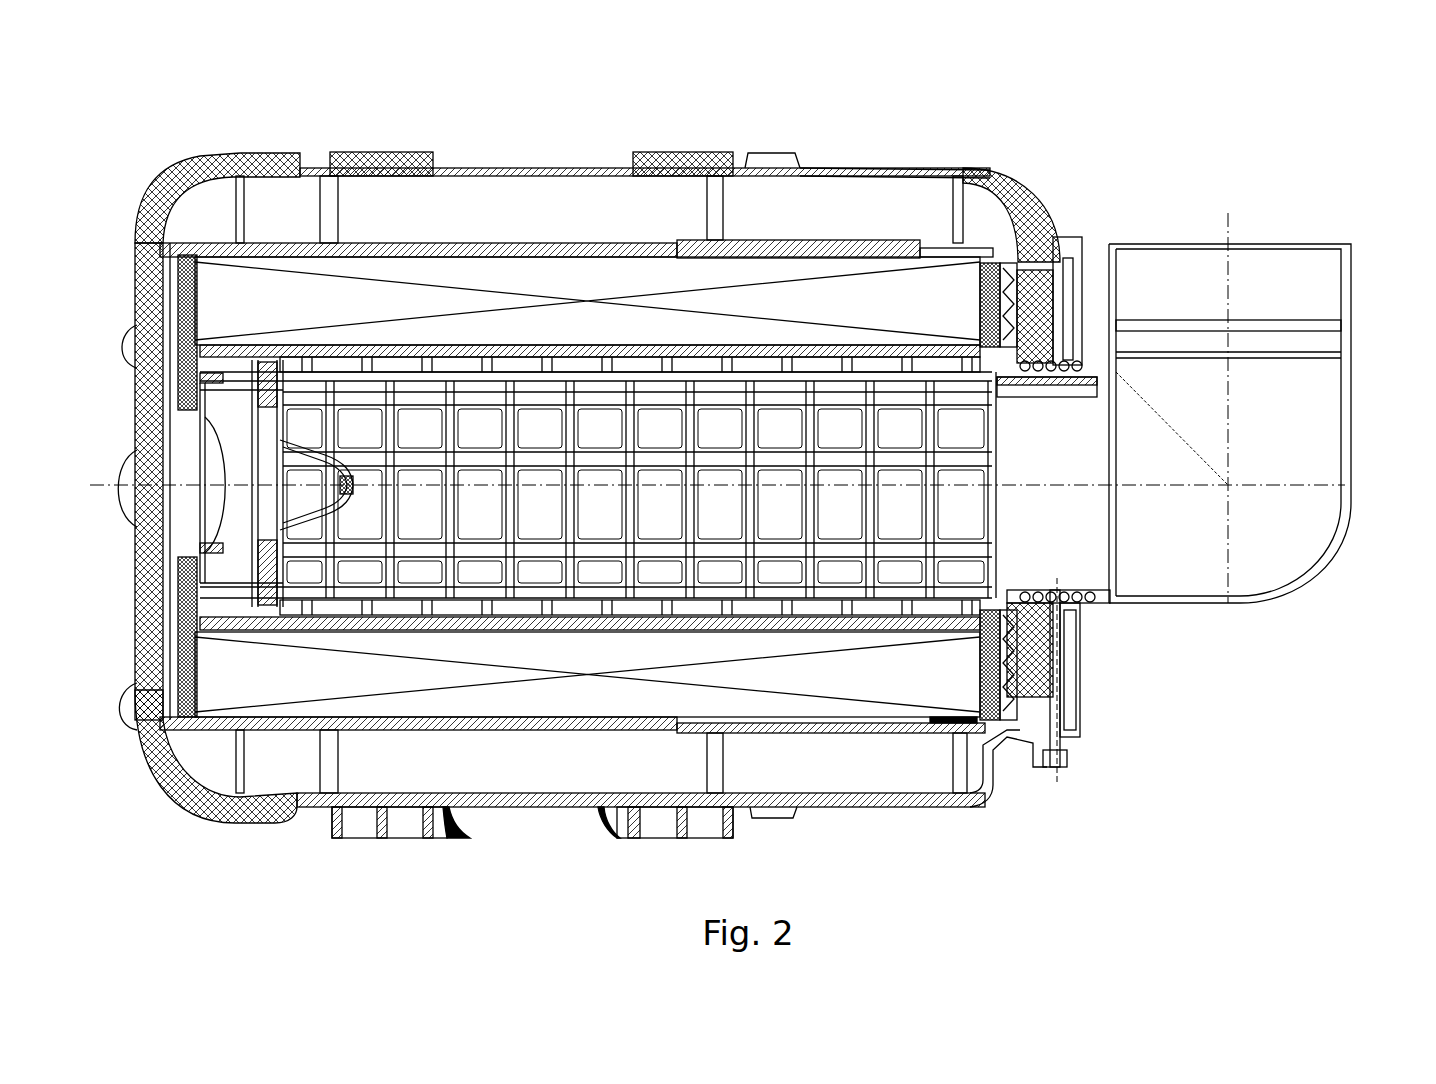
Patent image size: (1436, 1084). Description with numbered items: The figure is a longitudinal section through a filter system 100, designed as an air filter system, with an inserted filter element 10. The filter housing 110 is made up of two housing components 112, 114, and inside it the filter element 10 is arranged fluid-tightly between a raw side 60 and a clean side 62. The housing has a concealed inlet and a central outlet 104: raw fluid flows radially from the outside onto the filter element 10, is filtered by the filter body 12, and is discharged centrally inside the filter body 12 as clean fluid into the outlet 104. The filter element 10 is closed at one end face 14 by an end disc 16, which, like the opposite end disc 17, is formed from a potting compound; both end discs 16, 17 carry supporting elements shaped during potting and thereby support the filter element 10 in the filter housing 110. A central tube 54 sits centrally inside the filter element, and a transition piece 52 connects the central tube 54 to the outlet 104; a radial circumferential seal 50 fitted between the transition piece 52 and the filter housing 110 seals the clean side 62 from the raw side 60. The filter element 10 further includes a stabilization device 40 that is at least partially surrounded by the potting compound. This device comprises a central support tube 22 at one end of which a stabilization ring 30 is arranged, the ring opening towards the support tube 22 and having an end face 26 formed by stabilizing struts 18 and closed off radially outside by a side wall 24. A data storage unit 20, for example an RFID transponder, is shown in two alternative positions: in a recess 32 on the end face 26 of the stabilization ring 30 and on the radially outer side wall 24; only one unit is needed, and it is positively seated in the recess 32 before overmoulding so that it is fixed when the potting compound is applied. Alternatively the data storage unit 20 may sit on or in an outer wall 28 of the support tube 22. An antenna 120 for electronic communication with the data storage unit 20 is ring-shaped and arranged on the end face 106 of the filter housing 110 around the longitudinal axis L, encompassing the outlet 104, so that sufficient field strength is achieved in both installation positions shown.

The filter system 100 is at (1340, 200).
The filter element 10 is at (510, 240).
The filter body 12 is at (472, 277).
The end face 14 is at (1109, 310).
The end disc 16 is at (1119, 371).
The end disc 17 is at (137, 280).
The stabilizing struts 18 is at (1033, 687).
The data storage unit 20 is at (977, 323).
The support tube 22 is at (607, 350).
The side wall 24 is at (968, 245).
The end face 26 is at (1010, 340).
The outer wall 28 is at (630, 607).
The stabilization ring 30 is at (1023, 723).
The recess 32 is at (977, 305).
The stabilization device 40 is at (538, 330).
The seal 50 is at (1027, 590).
The transition piece 52 is at (1077, 590).
The central tube 54 is at (760, 373).
The raw side 60 is at (405, 224).
The clean side 62 is at (405, 446).
The outlet 104 is at (1273, 260).
The end face 106 is at (1067, 650).
The filter housing 110 is at (600, 446).
The housing component 112 is at (940, 170).
The housing component 114 is at (678, 150).
The antenna 120 is at (1073, 680).
The longitudinal axis L is at (1180, 490).